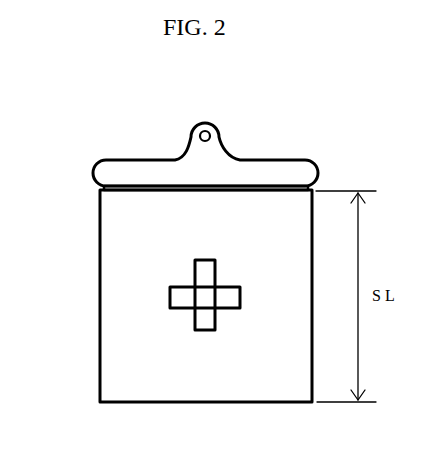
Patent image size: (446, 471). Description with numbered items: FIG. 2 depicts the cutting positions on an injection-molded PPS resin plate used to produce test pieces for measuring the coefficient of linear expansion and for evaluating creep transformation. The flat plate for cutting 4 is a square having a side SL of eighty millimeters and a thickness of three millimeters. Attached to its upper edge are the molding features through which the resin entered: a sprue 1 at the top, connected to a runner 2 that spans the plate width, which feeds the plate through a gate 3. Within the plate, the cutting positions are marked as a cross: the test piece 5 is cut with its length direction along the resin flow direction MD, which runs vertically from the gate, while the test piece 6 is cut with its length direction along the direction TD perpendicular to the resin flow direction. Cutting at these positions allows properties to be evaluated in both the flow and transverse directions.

The sprue 1 is at (208, 132).
The runner 2 is at (270, 173).
The gate 3 is at (100, 184).
The flat plate for cutting 4 is at (230, 385).
The test piece 5 is at (205, 318).
The test piece 6 is at (182, 297).